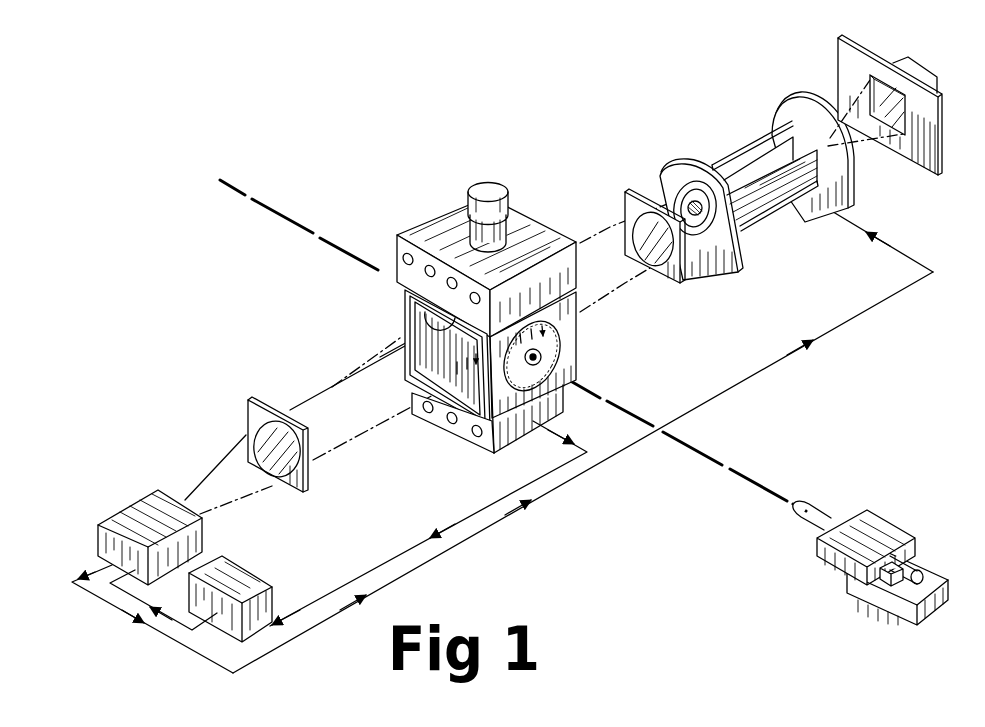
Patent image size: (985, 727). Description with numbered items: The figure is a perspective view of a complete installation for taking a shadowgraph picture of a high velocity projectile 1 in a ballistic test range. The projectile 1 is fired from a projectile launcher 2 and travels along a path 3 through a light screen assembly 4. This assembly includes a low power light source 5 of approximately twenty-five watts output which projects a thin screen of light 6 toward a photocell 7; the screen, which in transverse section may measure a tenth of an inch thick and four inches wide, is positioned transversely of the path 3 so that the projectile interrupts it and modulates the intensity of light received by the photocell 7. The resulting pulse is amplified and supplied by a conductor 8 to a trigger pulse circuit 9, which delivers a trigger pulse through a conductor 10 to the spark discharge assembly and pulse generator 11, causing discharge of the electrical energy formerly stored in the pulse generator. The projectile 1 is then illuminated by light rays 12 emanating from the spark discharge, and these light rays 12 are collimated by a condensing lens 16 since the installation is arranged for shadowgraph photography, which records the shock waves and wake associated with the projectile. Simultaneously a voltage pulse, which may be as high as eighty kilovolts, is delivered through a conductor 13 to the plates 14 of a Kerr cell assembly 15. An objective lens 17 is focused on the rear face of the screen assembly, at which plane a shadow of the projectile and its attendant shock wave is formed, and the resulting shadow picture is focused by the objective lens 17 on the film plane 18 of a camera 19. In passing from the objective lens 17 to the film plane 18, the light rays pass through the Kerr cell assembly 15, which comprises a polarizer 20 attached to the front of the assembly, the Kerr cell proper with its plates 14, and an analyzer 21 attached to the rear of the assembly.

The projectile 1 is at (543, 358).
The projectile launcher 2 is at (884, 516).
The path 3 is at (690, 446).
The light screen assembly 4 is at (578, 345).
The light source 5 is at (502, 180).
The screen of light 6 is at (490, 338).
The photocell 7 is at (453, 425).
The conductor 8 is at (446, 531).
The trigger pulse circuit 9 is at (237, 562).
The conductor 10 is at (138, 595).
The spark discharge assembly and pulse generator 11 is at (202, 536).
The light rays 12 is at (313, 458).
The conductor 13 is at (460, 543).
The plates 14 is at (740, 152).
The Kerr cell assembly 15 is at (763, 131).
The condensing lens 16 is at (248, 422).
The objective lens 17 is at (650, 268).
The film plane 18 is at (922, 63).
The camera 19 is at (923, 73).
The polarizer 20 is at (690, 195).
The analyzer 21 is at (843, 153).